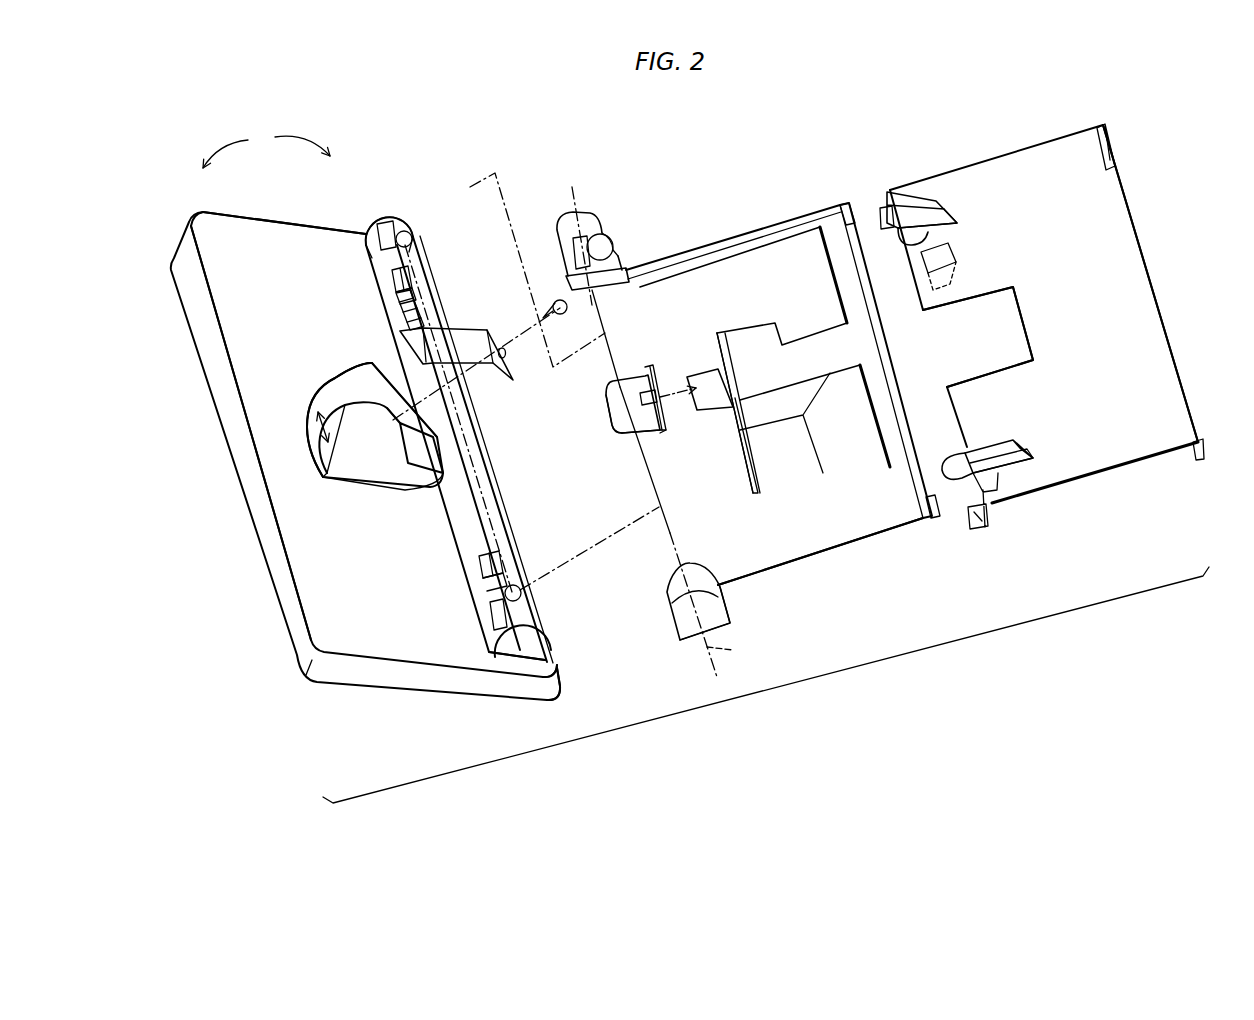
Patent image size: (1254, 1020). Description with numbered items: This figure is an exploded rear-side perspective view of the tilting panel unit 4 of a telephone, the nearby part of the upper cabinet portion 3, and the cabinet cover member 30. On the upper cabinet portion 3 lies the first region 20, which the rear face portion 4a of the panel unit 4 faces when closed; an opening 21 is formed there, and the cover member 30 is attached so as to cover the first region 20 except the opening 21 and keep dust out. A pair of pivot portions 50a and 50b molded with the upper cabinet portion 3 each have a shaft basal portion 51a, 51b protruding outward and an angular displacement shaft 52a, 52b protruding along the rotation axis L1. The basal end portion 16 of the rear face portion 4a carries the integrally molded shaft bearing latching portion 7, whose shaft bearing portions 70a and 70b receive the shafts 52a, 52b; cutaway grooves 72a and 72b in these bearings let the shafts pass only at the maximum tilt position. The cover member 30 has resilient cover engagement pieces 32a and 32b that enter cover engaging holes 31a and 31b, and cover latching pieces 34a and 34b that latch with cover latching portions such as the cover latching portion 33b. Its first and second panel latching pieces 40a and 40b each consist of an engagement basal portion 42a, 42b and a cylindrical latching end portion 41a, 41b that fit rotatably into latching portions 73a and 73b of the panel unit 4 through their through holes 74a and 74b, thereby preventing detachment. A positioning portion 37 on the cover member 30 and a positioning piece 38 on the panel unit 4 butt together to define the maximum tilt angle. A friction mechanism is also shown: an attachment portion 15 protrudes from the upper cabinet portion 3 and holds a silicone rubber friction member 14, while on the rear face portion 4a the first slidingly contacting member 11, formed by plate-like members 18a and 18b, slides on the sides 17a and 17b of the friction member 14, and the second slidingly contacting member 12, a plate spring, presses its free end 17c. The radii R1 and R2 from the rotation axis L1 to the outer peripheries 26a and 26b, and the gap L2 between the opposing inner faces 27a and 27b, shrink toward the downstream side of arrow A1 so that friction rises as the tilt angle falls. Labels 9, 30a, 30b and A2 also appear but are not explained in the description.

The upper cabinet portion 3 is at (822, 597).
The panel unit 4 is at (347, 695).
The rear face portion 4a is at (320, 233).
The shaft bearing latching portion 7 is at (391, 204).
The cover side wall 9 is at (194, 326).
The first slidingly contacting member 11 is at (336, 474).
The second slidingly contacting member 12 is at (479, 318).
The friction member 14 is at (628, 378).
The attachment portion 15 is at (710, 378).
The basal end portion 16 is at (555, 666).
The side of the friction member 17a is at (631, 444).
The side of the friction member 17b is at (613, 387).
The free end of the friction member 17c is at (611, 428).
The plate-like member 18a is at (387, 470).
The plate-like member 18b is at (325, 406).
The first region 20 is at (753, 265).
The opening 21 is at (863, 527).
The outer periphery 26a is at (345, 463).
The outer periphery 26b is at (333, 388).
The inner face 27a is at (357, 410).
The inner face 27b is at (316, 409).
The cabinet cover member 30 is at (1042, 162).
The plate side edge 30a is at (1163, 277).
The plate notch 30b is at (940, 403).
The cover engaging hole 31a is at (934, 521).
The cover engaging hole 31b is at (840, 201).
The cover engagement piece 32a is at (1195, 463).
The cover engagement piece 32b is at (1110, 133).
The cover latching portion 33b is at (604, 297).
The cover latching piece 34a is at (983, 528).
The cover latching piece 34b is at (880, 210).
The positioning portion 37 is at (955, 278).
The positioning piece 38 is at (433, 287).
The first panel latching piece 40a is at (984, 440).
The second panel latching piece 40b is at (924, 190).
The latching end portion 41a is at (960, 473).
The latching end portion 41b is at (900, 237).
The engagement basal portion 42a is at (1020, 454).
The engagement basal portion 42b is at (940, 214).
The first pivot portion 50a is at (672, 652).
The second pivot portion 50b is at (589, 196).
The shaft basal portion 51a is at (724, 596).
The shaft basal portion 51b is at (612, 240).
The angular displacement shaft 52a is at (677, 567).
The angular displacement shaft 52b is at (598, 240).
The shaft bearing portion 70a is at (476, 613).
The shaft bearing portion 70b is at (362, 238).
The cutaway groove 72a is at (517, 590).
The cutaway groove 72b is at (412, 233).
The latching portion 73a is at (474, 558).
The latching portion 73b is at (388, 275).
The through hole 74a is at (493, 597).
The through hole 74b is at (395, 290).
The arrow direction A1 is at (233, 141).
The rotation direction A2 is at (296, 130).
The radius of plate-like member R1 is at (430, 468).
The radius of plate-like member R2 is at (368, 427).
The rotation axis L1 is at (736, 652).
The gap L2 is at (315, 444).